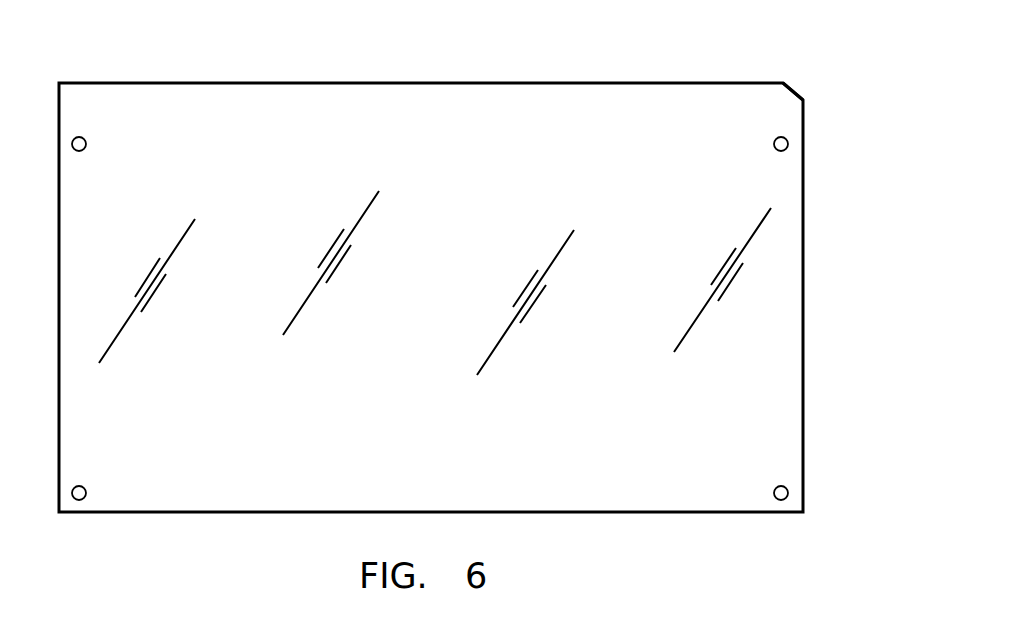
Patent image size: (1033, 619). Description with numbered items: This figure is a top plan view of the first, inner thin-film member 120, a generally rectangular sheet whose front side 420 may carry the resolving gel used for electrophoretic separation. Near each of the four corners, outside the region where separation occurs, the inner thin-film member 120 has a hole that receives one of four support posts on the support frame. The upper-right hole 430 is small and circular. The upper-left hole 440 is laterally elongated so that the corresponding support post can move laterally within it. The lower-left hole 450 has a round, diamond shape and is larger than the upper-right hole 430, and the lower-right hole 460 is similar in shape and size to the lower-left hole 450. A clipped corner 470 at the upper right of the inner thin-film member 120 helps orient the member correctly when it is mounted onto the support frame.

The inner thin-film member 120 is at (568, 83).
The clipped corner 470 is at (793, 82).
The front side 420 is at (442, 296).
The upper-left hole 440 is at (85, 148).
The upper-right hole 430 is at (775, 148).
The lower-left hole 450 is at (85, 488).
The lower-right hole 460 is at (775, 489).